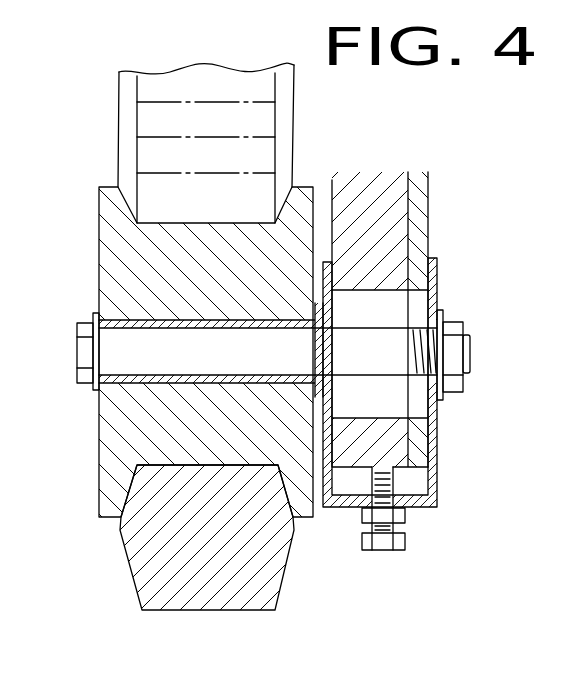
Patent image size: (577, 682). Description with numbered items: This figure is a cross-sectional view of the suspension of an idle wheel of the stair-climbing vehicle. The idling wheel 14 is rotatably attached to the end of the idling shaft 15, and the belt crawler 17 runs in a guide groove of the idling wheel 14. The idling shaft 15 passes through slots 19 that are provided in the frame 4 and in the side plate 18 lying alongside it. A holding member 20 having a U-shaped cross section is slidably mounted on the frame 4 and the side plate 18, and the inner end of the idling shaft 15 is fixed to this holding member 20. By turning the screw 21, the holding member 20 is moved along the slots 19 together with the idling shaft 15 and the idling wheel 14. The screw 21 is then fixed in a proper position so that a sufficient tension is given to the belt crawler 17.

The frame 4 is at (392, 214).
The idling wheel 14 is at (112, 468).
The idling shaft 15 is at (123, 372).
The belt crawler 17 is at (140, 608).
The side plate 18 is at (418, 241).
The slot 19 is at (392, 300).
The holding member 20 is at (428, 505).
The screw 21 is at (371, 483).